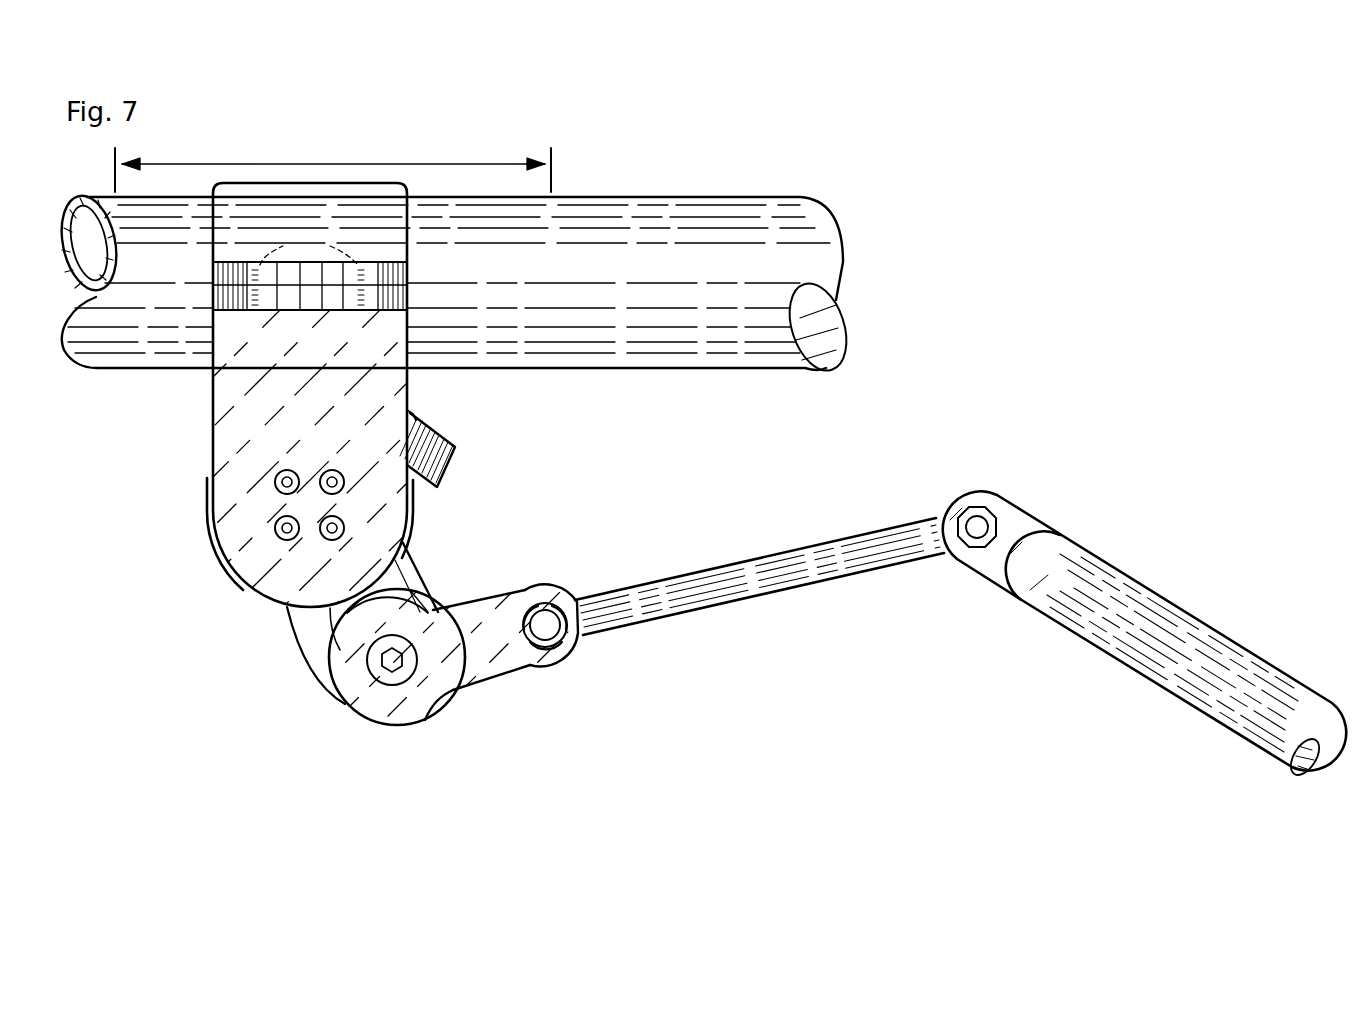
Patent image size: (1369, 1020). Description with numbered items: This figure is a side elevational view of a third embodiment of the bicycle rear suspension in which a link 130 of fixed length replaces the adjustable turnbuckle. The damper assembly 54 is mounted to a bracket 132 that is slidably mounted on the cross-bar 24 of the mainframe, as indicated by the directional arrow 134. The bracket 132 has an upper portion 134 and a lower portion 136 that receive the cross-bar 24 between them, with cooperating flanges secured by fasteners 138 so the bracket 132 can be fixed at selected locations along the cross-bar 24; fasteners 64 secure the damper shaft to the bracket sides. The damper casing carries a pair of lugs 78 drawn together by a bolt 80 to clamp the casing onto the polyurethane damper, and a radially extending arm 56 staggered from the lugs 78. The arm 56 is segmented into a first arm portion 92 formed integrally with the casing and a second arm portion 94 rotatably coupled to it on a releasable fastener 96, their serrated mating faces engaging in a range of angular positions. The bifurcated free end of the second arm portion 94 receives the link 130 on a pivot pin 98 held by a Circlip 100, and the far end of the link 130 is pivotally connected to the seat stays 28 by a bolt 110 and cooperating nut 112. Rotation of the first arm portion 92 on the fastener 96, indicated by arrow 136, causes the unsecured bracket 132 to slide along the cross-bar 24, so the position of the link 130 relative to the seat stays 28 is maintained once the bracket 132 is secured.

The cross-bar 24 is at (630, 196).
The seat stays 28 is at (1120, 565).
The damper assembly 54 is at (210, 520).
The arm 56 is at (352, 722).
The fasteners 64 is at (284, 472).
The lugs 78 is at (420, 414).
The bolt 80 is at (455, 447).
The first arm portion 92 is at (408, 548).
The second arm portion 94 is at (522, 584).
The releasable fastener 96 is at (414, 648).
The pivot pin 98 is at (560, 598).
The Circlip 100 is at (552, 650).
The bolt 110 is at (998, 513).
The nut 112 is at (982, 500).
The link 130 is at (740, 556).
The bracket 132 is at (218, 423).
The directional arrow / upper portion 134 is at (385, 153).
The lower portion / arrow 136 is at (410, 298).
The fasteners 138 is at (309, 249).